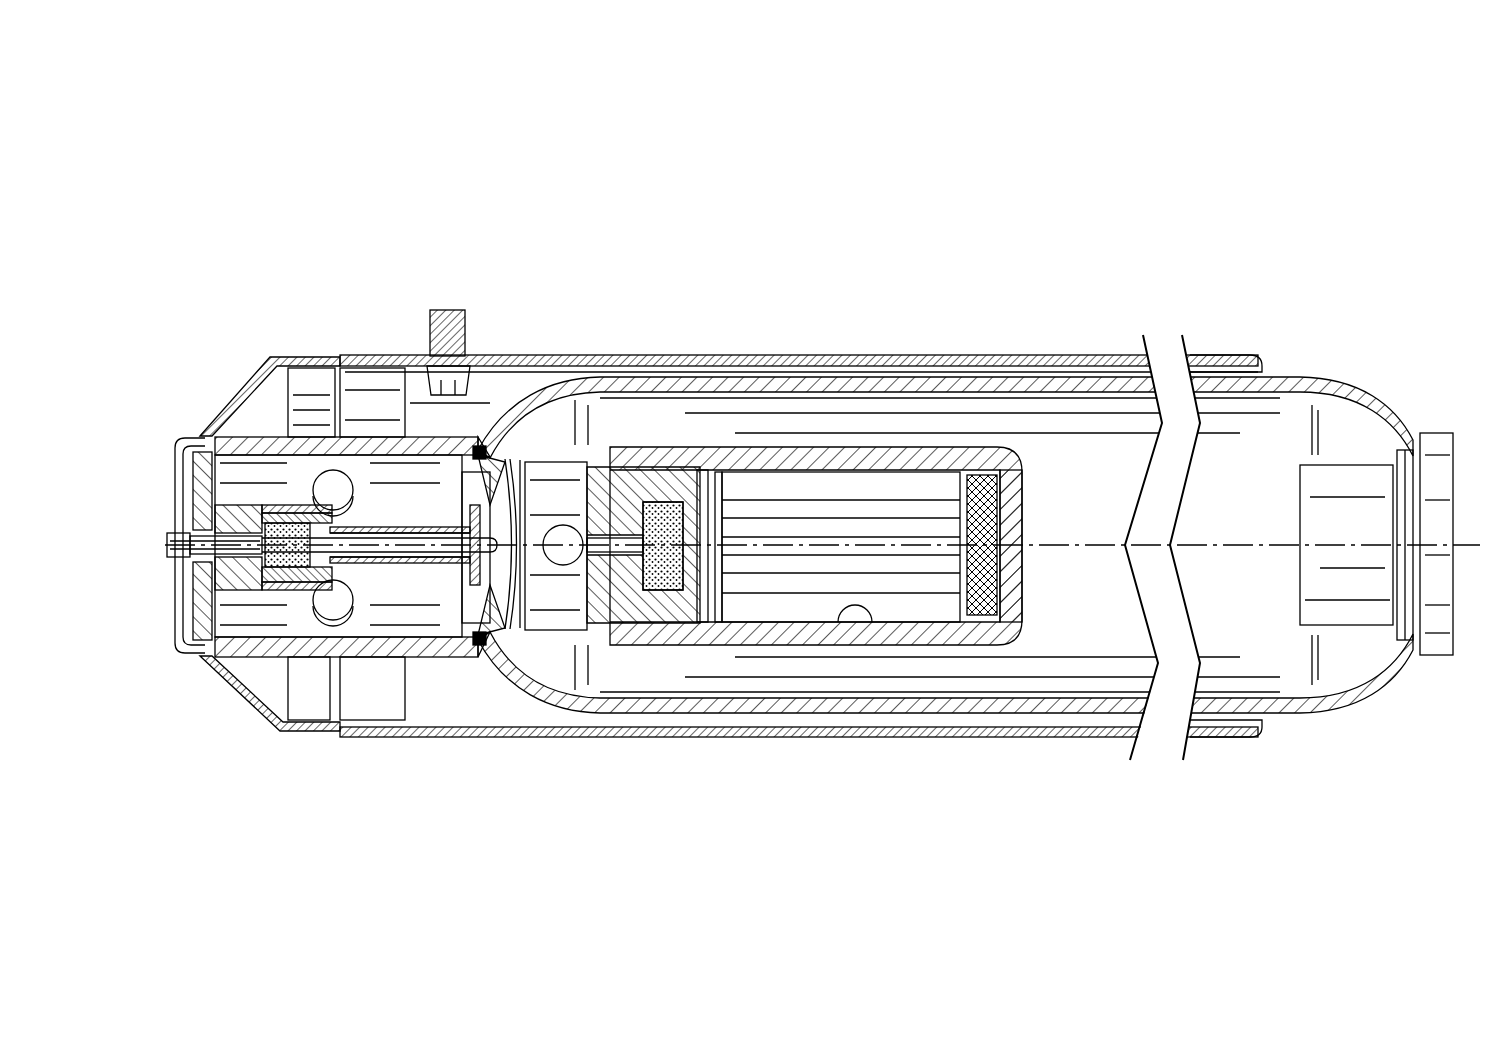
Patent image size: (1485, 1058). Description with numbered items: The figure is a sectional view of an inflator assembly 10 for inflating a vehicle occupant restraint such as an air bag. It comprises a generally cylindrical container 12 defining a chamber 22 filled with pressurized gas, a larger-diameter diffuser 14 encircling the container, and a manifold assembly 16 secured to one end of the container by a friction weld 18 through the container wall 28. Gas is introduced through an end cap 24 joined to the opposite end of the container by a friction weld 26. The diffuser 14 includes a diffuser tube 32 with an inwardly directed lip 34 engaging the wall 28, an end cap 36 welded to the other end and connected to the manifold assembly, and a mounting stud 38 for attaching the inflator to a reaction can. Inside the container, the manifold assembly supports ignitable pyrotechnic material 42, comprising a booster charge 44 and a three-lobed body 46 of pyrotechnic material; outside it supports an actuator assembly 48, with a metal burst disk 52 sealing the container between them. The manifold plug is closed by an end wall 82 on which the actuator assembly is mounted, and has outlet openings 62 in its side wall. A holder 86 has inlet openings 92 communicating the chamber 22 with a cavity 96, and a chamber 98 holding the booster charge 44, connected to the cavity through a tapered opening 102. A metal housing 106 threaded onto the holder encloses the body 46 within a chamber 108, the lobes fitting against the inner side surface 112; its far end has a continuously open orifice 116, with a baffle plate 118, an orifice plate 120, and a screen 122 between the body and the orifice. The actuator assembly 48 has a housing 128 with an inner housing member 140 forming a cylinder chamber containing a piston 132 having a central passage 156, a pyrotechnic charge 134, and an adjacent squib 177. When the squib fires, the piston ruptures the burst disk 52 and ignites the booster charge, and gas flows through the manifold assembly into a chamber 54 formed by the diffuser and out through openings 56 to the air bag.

The inflator assembly 10 is at (1182, 248).
The container 12 is at (1040, 375).
The diffuser 14 is at (943, 468).
The manifold assembly 16 is at (380, 420).
The friction weld 18 is at (482, 450).
The chamber 22 is at (1088, 420).
The end cap 24 is at (1440, 657).
The friction weld 26 is at (1413, 448).
The wall 28 is at (1213, 388).
The diffuser tube 32 is at (985, 356).
The lip 34 is at (1275, 380).
The end cap 36 is at (232, 683).
The mounting stud 38 is at (447, 315).
The ignitable pyrotechnic material 42 is at (790, 458).
The booster charge 44 is at (761, 472).
The body of pyrotechnic material 46 is at (867, 487).
The actuator assembly 48 is at (260, 495).
The burst disk 52 is at (605, 535).
The chamber 54 is at (517, 707).
The openings 56 is at (903, 728).
The outlet openings 62 is at (327, 650).
The end wall 82 is at (205, 612).
The holder 86 is at (668, 515).
The inlet openings 92 is at (572, 616).
The cavity 96 is at (553, 595).
The chamber 98 is at (650, 492).
The opening 102 is at (608, 490).
The housing 106 is at (797, 647).
The chamber 108 is at (704, 615).
The inner side surface 112 is at (873, 622).
The orifice 116 is at (1012, 554).
The baffle plate 118 is at (1010, 470).
The orifice plate 120 is at (1003, 487).
The screen 122 is at (988, 522).
The housing 128 is at (228, 654).
The piston 132 is at (365, 560).
The pyrotechnic charge 134 is at (290, 567).
The inner housing member 140 is at (410, 566).
The central passage 156 is at (395, 545).
The squib 177 is at (258, 537).